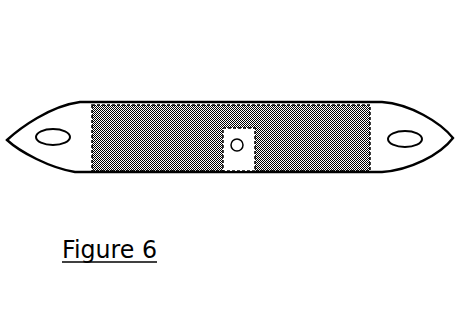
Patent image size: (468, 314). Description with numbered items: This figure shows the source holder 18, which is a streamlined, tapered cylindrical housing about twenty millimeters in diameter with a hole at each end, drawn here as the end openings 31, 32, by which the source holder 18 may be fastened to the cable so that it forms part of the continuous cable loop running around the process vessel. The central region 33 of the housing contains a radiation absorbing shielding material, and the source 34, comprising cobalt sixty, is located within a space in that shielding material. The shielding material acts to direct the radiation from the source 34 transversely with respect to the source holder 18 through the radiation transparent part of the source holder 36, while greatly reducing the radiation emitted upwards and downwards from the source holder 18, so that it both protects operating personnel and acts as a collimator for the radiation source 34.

The source holder 18 is at (219, 70).
The first end aperture 31 is at (88, 102).
The second end aperture 32 is at (410, 142).
The abrasive/grip surface region 33 is at (295, 118).
The source 34 is at (239, 150).
The radiation transparent part of the source holder 36 is at (236, 152).